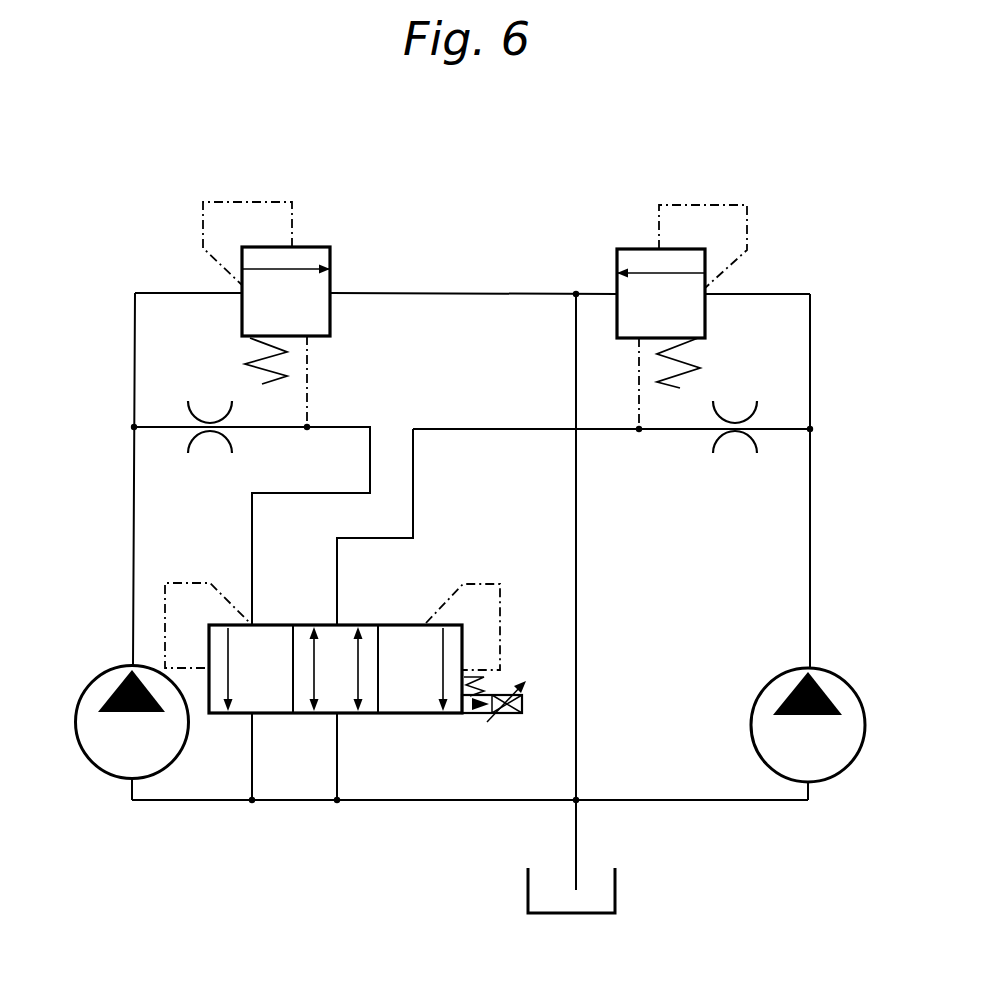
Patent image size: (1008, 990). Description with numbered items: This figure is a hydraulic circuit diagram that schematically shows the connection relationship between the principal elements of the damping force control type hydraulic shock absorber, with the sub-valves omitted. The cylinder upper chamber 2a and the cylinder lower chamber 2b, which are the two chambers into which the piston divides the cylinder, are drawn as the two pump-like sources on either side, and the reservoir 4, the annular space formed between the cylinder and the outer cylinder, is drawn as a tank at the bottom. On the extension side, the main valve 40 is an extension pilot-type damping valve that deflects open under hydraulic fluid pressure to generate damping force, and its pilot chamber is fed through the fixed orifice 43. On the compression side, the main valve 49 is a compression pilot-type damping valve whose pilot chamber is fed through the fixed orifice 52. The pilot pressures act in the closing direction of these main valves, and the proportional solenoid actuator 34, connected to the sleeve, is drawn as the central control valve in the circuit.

The main valve 40 is at (313, 247).
The main valve 49 is at (635, 249).
The fixed orifice 43 is at (210, 433).
The fixed orifice 52 is at (735, 433).
The proportional solenoid actuator 34 is at (420, 715).
The cylinder lower chamber 2b is at (90, 766).
The cylinder upper chamber 2a is at (855, 760).
The reservoir 4 is at (615, 888).